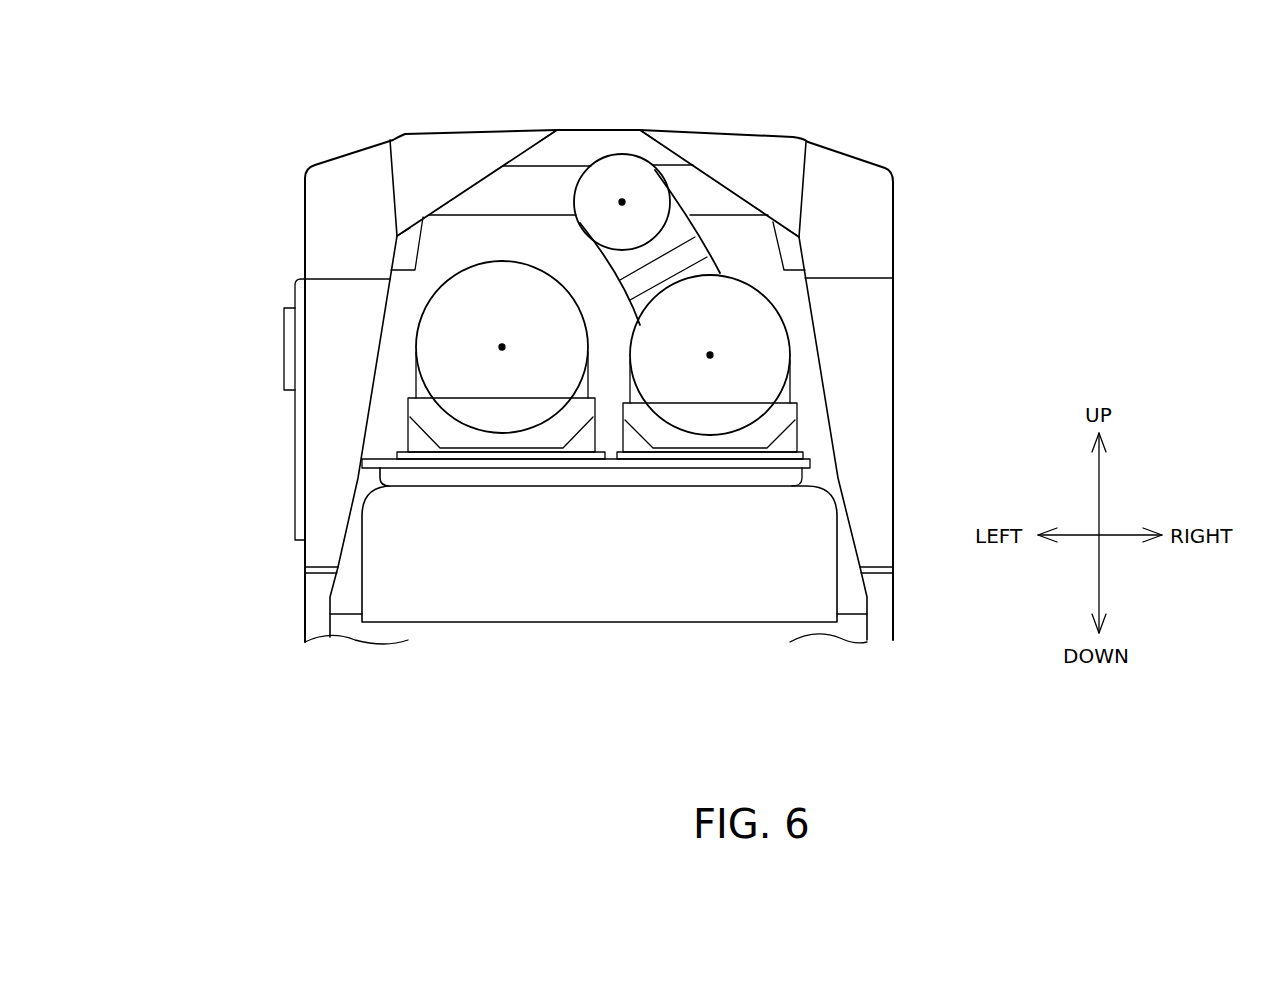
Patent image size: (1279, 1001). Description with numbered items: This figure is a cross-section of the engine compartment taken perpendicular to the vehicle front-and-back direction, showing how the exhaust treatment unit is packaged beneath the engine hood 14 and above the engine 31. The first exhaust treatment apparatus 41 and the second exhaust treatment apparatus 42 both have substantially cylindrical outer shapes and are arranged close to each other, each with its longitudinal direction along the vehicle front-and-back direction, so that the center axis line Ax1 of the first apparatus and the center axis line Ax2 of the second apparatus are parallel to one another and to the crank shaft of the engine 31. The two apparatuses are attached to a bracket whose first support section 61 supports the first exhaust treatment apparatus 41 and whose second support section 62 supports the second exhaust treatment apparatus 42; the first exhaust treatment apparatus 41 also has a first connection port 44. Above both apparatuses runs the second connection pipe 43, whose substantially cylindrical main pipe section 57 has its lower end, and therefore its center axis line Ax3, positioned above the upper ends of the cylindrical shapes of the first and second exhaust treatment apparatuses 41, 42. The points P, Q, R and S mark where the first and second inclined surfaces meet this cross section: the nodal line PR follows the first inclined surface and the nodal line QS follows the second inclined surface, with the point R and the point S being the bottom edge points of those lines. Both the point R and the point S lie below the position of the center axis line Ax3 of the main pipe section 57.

The engine hood 14 is at (457, 177).
The engine 31 is at (587, 557).
The first exhaust treatment apparatus 41 is at (737, 275).
The second exhaust treatment apparatus 42 is at (438, 285).
The second connection pipe 43 is at (628, 152).
The first connection port 44 is at (683, 475).
The main pipe section 57 is at (610, 153).
The first support section 61 is at (775, 425).
The second support section 62 is at (438, 424).
The center axis line of first exhaust treatment apparatus Ax1 is at (712, 355).
The center axis line of second exhaust treatment apparatus Ax2 is at (500, 346).
The center axis line of main pipe section Ax3 is at (624, 201).
The point P is at (551, 119).
The point Q is at (650, 119).
The point R is at (392, 233).
The point S is at (804, 235).